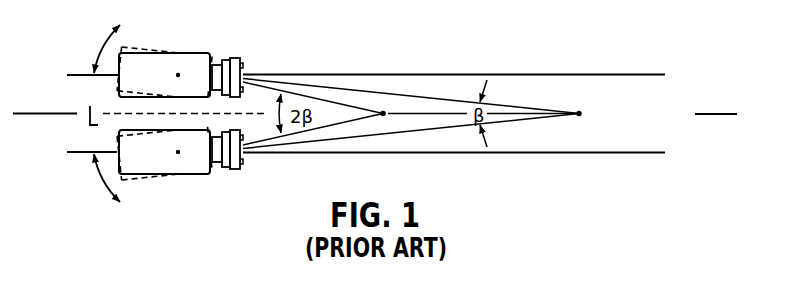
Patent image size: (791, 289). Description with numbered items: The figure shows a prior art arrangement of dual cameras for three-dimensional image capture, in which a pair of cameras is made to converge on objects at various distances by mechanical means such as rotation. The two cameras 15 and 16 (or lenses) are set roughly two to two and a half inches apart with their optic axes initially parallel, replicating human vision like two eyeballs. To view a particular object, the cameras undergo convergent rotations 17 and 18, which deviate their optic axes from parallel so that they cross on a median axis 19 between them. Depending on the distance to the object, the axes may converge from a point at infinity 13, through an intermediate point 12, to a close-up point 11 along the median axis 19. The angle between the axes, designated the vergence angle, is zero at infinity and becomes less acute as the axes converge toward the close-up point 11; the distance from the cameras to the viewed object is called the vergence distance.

The close-up point 11 is at (382, 112).
The intermediate point 12 is at (578, 112).
The point at infinity 13 is at (723, 113).
The first camera 15 is at (188, 58).
The second camera 16 is at (190, 170).
The convergent rotation of first camera 17 is at (98, 50).
The convergent rotation of second camera 18 is at (98, 177).
The median axis 19 is at (50, 112).